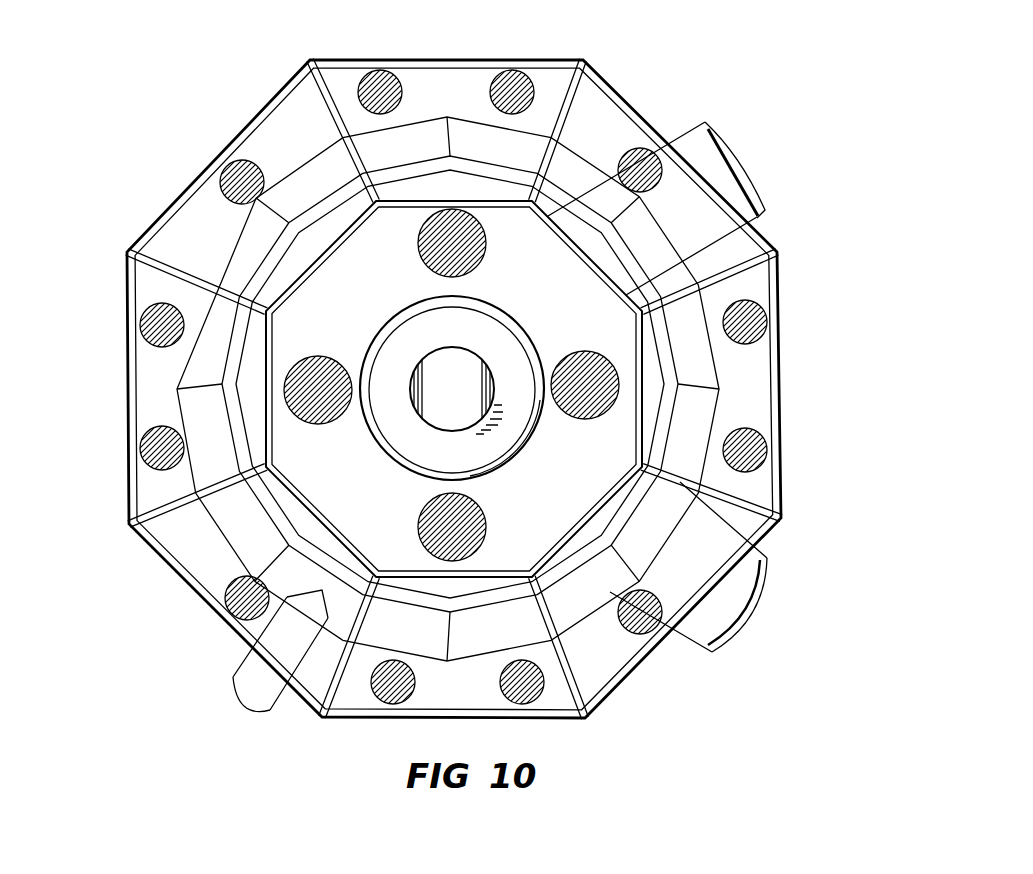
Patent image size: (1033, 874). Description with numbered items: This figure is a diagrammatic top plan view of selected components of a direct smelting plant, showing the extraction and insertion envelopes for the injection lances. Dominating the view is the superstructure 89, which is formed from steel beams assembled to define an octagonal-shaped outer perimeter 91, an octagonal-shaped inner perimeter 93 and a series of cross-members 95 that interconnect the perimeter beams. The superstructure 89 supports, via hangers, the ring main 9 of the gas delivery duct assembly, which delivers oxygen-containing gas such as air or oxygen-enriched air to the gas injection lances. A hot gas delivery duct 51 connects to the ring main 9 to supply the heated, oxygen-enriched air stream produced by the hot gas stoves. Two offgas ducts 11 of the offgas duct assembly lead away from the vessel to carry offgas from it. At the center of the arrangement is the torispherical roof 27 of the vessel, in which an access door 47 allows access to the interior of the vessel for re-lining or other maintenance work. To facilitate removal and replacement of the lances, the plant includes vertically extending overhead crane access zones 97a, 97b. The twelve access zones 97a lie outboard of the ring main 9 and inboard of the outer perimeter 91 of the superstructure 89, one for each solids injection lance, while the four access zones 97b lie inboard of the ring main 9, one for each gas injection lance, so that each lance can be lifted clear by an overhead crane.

The superstructure 89 is at (238, 110).
The octagonal-shaped outer perimeter 91 is at (155, 218).
The octagonal-shaped inner perimeter 93 is at (300, 292).
The cross-members 95 is at (327, 105).
The overhead crane access zones 97a is at (375, 88).
The overhead crane access zones 97b is at (415, 240).
The torispherical roof 27 is at (413, 437).
The access door 47 is at (441, 399).
The offgas ducts 11 is at (700, 140).
The hot gas delivery duct 51 is at (248, 668).
The ring main 9 is at (577, 608).